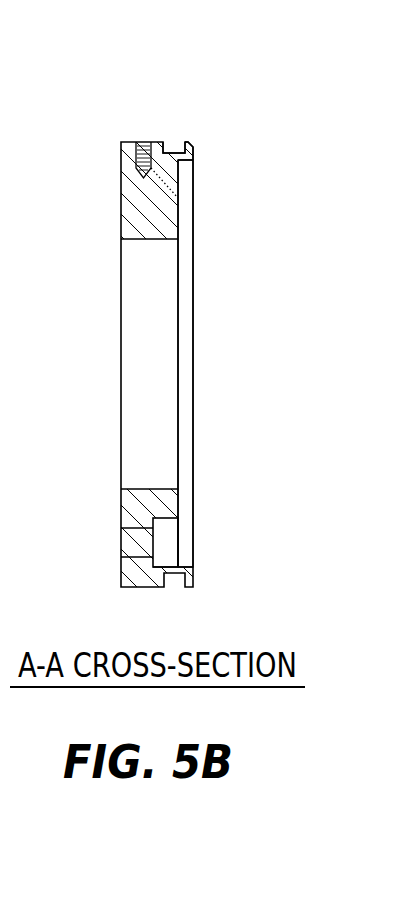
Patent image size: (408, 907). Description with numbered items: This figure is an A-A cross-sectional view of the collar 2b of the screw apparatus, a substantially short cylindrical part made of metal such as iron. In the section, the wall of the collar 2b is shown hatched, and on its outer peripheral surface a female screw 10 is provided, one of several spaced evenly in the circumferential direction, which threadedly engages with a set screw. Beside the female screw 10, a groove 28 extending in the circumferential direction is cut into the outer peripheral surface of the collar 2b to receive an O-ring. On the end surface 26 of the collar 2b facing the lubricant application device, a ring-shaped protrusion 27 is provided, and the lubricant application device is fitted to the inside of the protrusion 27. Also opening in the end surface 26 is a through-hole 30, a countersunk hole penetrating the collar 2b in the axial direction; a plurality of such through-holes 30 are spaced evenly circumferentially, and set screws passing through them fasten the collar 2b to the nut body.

The female screw 10 is at (137, 142).
The collar 2b is at (147, 138).
The groove 28 is at (173, 152).
The protrusion 27 is at (193, 152).
The end surface 26 is at (176, 201).
The through-hole 30 is at (143, 554).